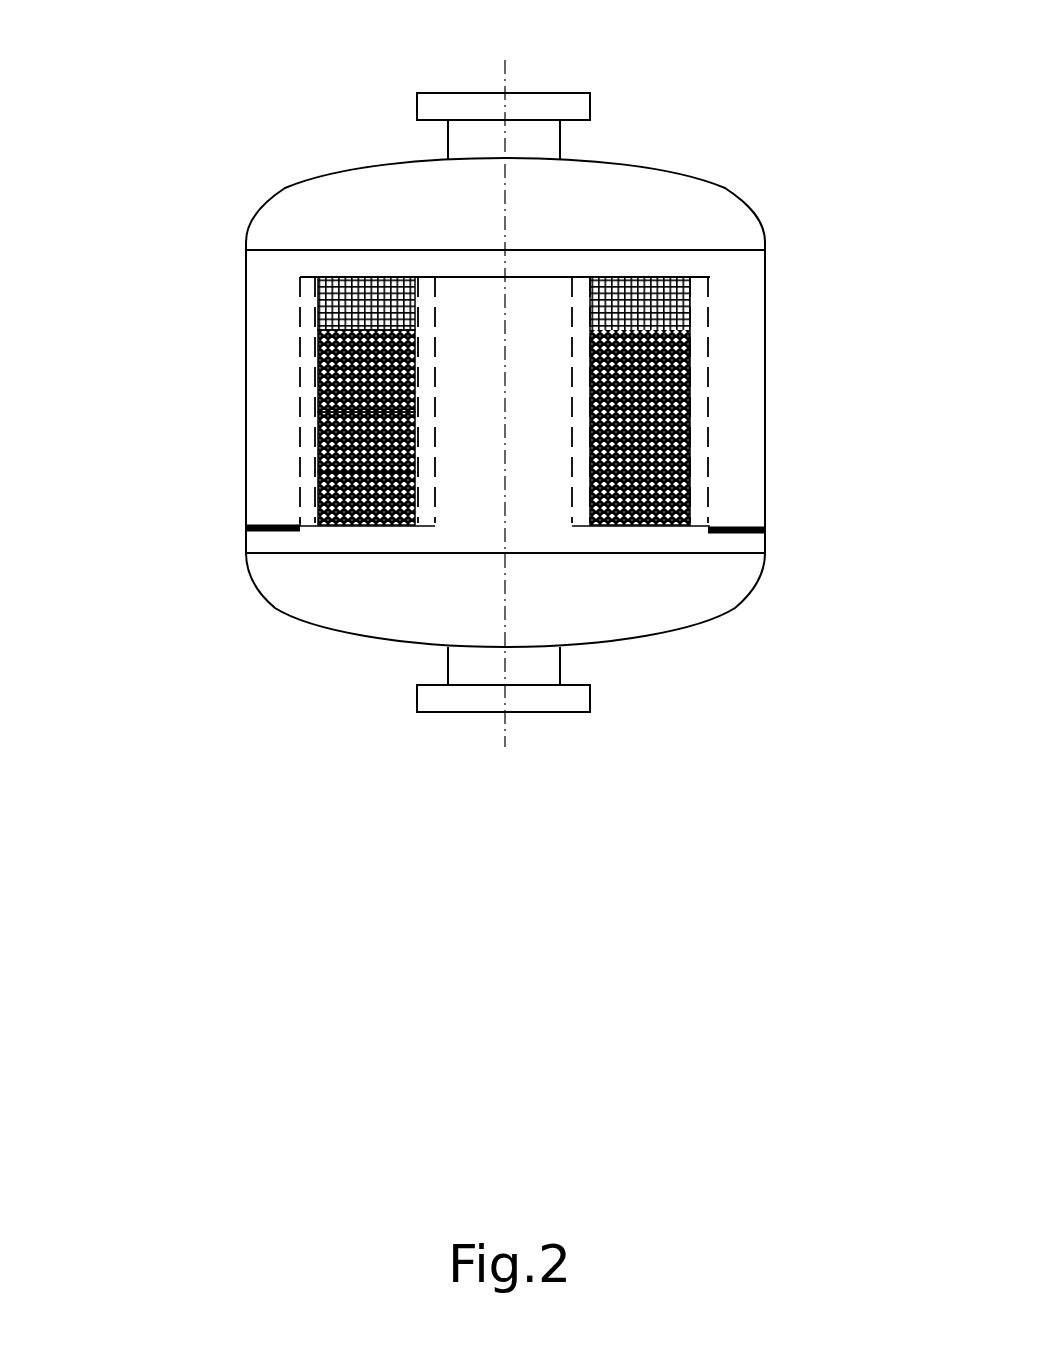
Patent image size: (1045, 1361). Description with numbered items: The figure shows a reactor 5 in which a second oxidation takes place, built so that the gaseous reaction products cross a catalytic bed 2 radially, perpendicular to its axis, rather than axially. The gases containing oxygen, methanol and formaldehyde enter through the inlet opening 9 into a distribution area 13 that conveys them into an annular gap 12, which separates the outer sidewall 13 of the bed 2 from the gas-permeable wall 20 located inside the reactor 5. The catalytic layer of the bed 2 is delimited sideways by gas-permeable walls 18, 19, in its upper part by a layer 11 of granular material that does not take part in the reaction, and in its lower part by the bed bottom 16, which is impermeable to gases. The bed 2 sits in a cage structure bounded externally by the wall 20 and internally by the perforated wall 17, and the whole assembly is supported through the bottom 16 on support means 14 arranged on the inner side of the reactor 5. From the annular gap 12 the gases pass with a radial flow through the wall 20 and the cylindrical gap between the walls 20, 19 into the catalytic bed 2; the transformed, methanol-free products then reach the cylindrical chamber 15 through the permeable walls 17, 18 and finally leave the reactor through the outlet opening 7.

The catalytic bed 2 is at (673, 527).
The reactor 5 is at (225, 152).
The outlet opening 7 is at (545, 712).
The inlet opening 9 is at (545, 93).
The layer of granular material 11 is at (690, 277).
The annular gap 12 is at (733, 357).
The outer sidewall / gas distribution area 13 is at (633, 213).
The support means 14 is at (765, 530).
The cylindrical chamber 15 is at (480, 487).
The bed bottom 16 is at (363, 527).
The perforated inner wall 17 is at (437, 473).
The gas-permeable wall 18 is at (415, 412).
The gas-permeable wall 19 is at (313, 340).
The gas-permeable wall 20 is at (297, 283).